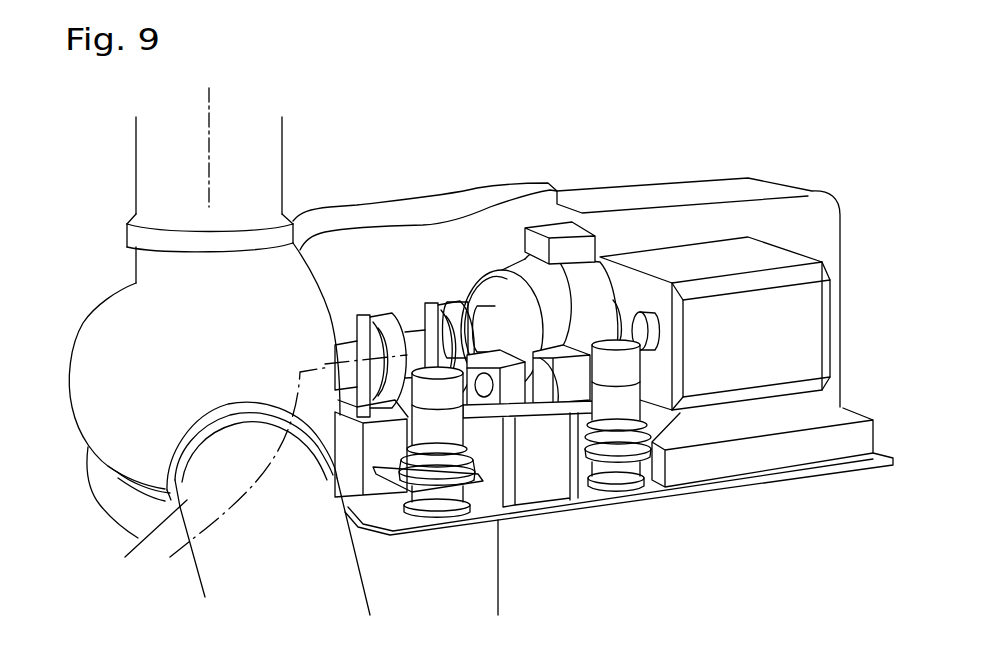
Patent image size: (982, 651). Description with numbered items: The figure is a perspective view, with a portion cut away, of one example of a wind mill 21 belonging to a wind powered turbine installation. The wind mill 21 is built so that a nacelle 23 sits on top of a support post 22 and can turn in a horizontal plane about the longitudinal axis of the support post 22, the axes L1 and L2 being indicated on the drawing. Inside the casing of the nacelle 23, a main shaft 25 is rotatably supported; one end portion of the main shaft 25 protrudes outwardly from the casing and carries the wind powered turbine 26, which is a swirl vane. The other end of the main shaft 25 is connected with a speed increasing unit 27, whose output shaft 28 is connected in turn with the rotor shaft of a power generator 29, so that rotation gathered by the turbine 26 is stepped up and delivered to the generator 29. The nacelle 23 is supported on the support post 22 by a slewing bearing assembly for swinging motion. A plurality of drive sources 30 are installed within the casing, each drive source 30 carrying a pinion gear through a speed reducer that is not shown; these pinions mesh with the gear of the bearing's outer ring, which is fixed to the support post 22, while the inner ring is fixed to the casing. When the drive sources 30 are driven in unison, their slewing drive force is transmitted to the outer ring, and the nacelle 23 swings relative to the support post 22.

The wind mill 21 is at (108, 280).
The support post 22 is at (483, 587).
The nacelle 23 is at (672, 184).
The main shaft 25 is at (351, 352).
The wind powered turbine 26 is at (150, 157).
The speed increasing unit 27 is at (585, 297).
The output shaft 28 is at (645, 355).
The power generator 29 is at (793, 372).
The drive source 30 is at (435, 433).
The axis L1 is at (275, 472).
The axis L2 is at (210, 107).